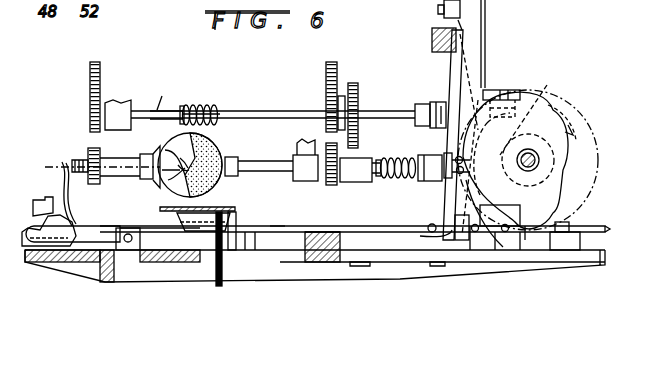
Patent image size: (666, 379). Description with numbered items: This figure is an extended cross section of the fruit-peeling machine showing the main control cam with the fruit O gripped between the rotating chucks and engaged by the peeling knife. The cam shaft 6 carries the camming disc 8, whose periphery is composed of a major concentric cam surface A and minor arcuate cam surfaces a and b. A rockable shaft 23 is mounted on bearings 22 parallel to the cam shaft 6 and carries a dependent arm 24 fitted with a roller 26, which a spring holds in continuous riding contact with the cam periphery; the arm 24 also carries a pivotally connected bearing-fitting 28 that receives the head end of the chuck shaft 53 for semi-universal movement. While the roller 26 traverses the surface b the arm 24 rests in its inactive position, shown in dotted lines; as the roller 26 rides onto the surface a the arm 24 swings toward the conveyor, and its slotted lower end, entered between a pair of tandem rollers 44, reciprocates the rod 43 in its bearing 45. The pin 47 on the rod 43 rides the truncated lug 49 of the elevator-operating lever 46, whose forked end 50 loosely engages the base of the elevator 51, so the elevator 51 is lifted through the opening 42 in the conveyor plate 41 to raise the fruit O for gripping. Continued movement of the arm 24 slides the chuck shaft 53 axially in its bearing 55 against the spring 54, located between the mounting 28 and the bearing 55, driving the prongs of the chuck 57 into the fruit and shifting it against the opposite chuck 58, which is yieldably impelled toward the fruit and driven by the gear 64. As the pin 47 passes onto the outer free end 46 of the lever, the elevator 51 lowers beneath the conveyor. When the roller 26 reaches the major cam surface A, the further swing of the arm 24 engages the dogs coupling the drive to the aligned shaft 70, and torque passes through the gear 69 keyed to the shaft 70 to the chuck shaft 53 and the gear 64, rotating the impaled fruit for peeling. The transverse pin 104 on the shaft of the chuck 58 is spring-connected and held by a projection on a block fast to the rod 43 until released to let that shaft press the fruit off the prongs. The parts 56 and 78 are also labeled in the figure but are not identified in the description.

The cam shaft 6 is at (539, 159).
The camming disc 8 is at (548, 108).
The bearing 22 is at (486, 22).
The rockable shaft 23 is at (432, 46).
The dependent arm 24 is at (452, 80).
The roller 26 is at (452, 157).
The bearing-fitting 28 is at (455, 218).
The conveyor plate 41 is at (212, 206).
The registering opening 42 is at (240, 212).
The rod 43 is at (278, 226).
The tandem rollers 44 is at (423, 240).
The bearing 45 is at (342, 224).
The outer free end of lever 46 is at (34, 235).
The pin 47 is at (42, 220).
The truncated lug 49 is at (63, 184).
The forked end 50 is at (222, 255).
The elevator 51 is at (236, 236).
The chuck shaft 53 is at (268, 162).
The spring 54 is at (400, 158).
The shaft bearing 55 is at (307, 168).
The gear 56 is at (338, 180).
The chuck 57 is at (236, 158).
The chuck 58 is at (145, 154).
The drive gear 64 is at (88, 150).
The gear 69 is at (326, 70).
The shaft 70 is at (250, 112).
The cutting tool 78 is at (177, 170).
The transverse pin 104 is at (38, 198).
The fruit O is at (215, 145).
The minor cam surface a is at (555, 114).
The minor cam surface b is at (570, 166).
The major cam surface A is at (600, 196).